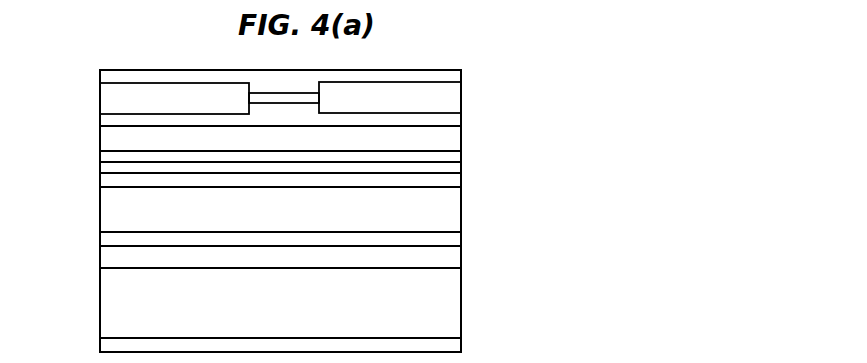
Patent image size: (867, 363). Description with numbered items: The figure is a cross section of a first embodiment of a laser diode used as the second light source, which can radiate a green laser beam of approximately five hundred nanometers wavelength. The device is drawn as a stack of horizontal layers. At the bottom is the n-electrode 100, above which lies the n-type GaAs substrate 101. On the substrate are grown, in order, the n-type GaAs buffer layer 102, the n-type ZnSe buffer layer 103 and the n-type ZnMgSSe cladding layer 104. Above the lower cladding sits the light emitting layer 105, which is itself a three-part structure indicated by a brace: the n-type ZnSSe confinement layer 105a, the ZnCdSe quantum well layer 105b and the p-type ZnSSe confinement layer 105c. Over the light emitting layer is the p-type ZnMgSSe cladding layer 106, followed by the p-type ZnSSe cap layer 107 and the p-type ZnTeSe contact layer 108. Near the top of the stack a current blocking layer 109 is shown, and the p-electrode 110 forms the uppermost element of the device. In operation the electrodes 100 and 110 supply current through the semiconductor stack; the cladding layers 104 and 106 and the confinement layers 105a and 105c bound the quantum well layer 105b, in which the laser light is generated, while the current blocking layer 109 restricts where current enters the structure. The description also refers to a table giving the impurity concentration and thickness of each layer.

The n-electrode 100 is at (452, 343).
The n-type GaAs substrate 101 is at (450, 299).
The n-type GaAs buffer layer 102 is at (452, 260).
The n-type ZnSe buffer layer 103 is at (452, 238).
The n-type ZnMgSSe cladding layer 104 is at (452, 213).
The light emitting layer 105 is at (90, 153).
The n-type ZnSSe confinement layer 105a is at (452, 180).
The ZnCdSe quantum well layer 105b is at (452, 171).
The p-type ZnSSe confinement layer 105c is at (452, 156).
The p-type ZnMgSSe cladding layer 106 is at (450, 139).
The p-type ZnSSe cap layer 107 is at (455, 118).
The p-type ZnTeSe contact layer 108 is at (282, 97).
The current blocking layer 109 is at (330, 109).
The p-electrode 110 is at (368, 77).